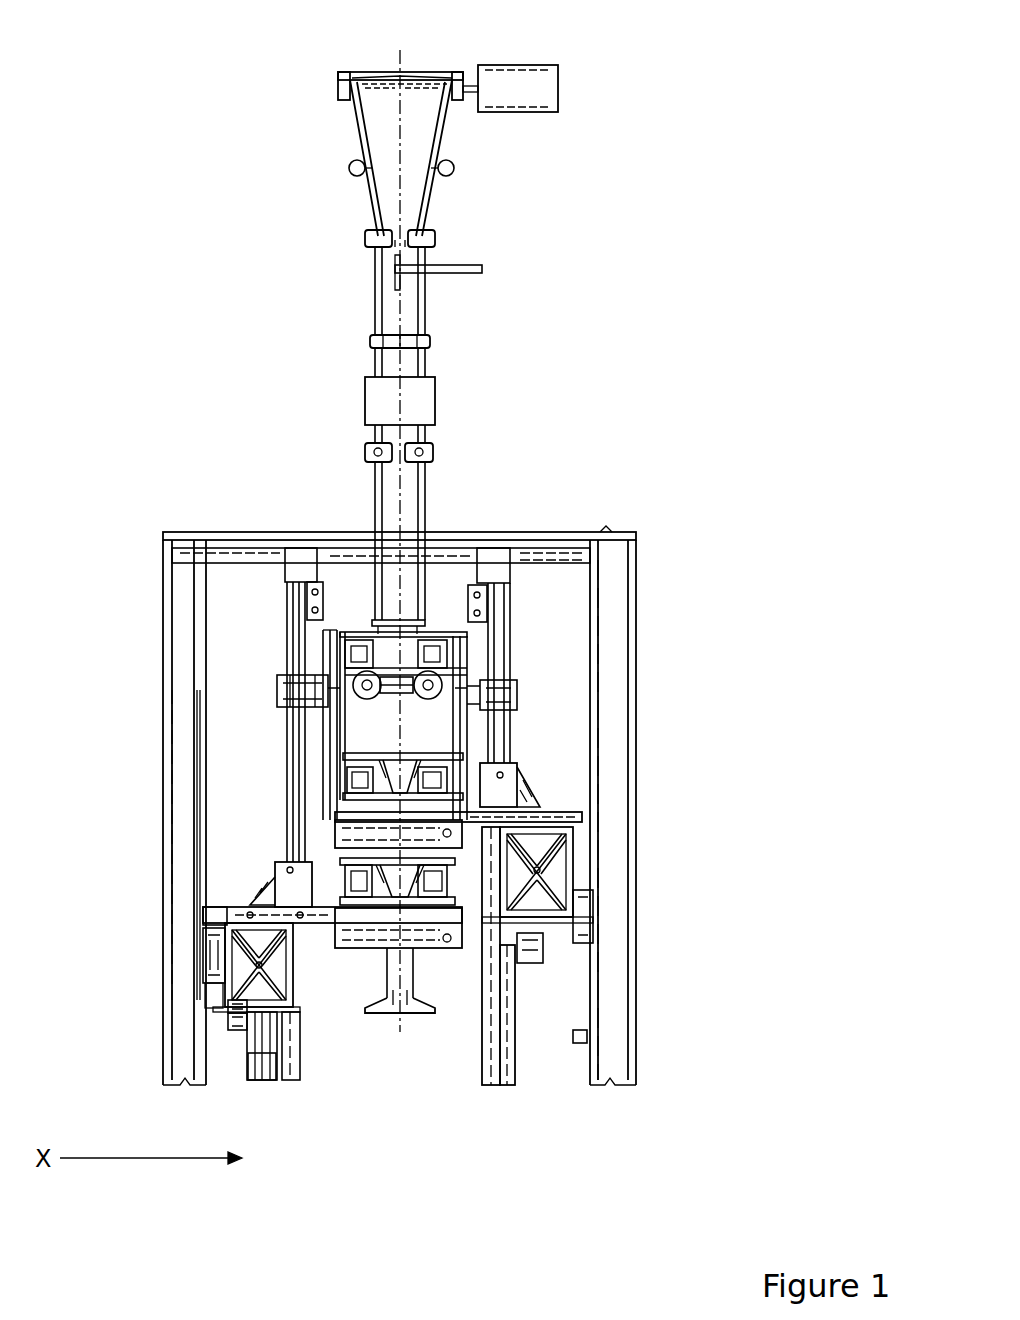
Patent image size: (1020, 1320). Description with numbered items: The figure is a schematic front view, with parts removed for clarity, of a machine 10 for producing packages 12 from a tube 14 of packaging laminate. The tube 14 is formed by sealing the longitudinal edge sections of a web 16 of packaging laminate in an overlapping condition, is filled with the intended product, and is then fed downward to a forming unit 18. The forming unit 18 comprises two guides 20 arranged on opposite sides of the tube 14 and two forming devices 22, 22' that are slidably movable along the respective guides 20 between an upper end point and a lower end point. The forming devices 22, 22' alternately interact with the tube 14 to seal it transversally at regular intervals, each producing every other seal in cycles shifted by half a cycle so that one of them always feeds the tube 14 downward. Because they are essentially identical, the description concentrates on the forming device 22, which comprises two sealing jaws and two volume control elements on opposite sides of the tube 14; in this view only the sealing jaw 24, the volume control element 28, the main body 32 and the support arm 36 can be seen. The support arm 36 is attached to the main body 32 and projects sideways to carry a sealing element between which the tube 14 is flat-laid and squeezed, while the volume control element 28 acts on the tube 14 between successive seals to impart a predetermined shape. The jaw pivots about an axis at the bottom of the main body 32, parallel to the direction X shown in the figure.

The machine 10 is at (211, 307).
The packages 12 is at (407, 983).
The tube 14 is at (407, 498).
The web 16 is at (422, 108).
The forming unit 18 is at (650, 513).
The guides 20 is at (295, 632).
The forming device 22 is at (202, 959).
The forming device 22' is at (540, 895).
The sealing jaw 24 is at (222, 943).
The volume control element 28 is at (345, 858).
The main body 32 is at (262, 978).
The support arm 36 is at (318, 917).